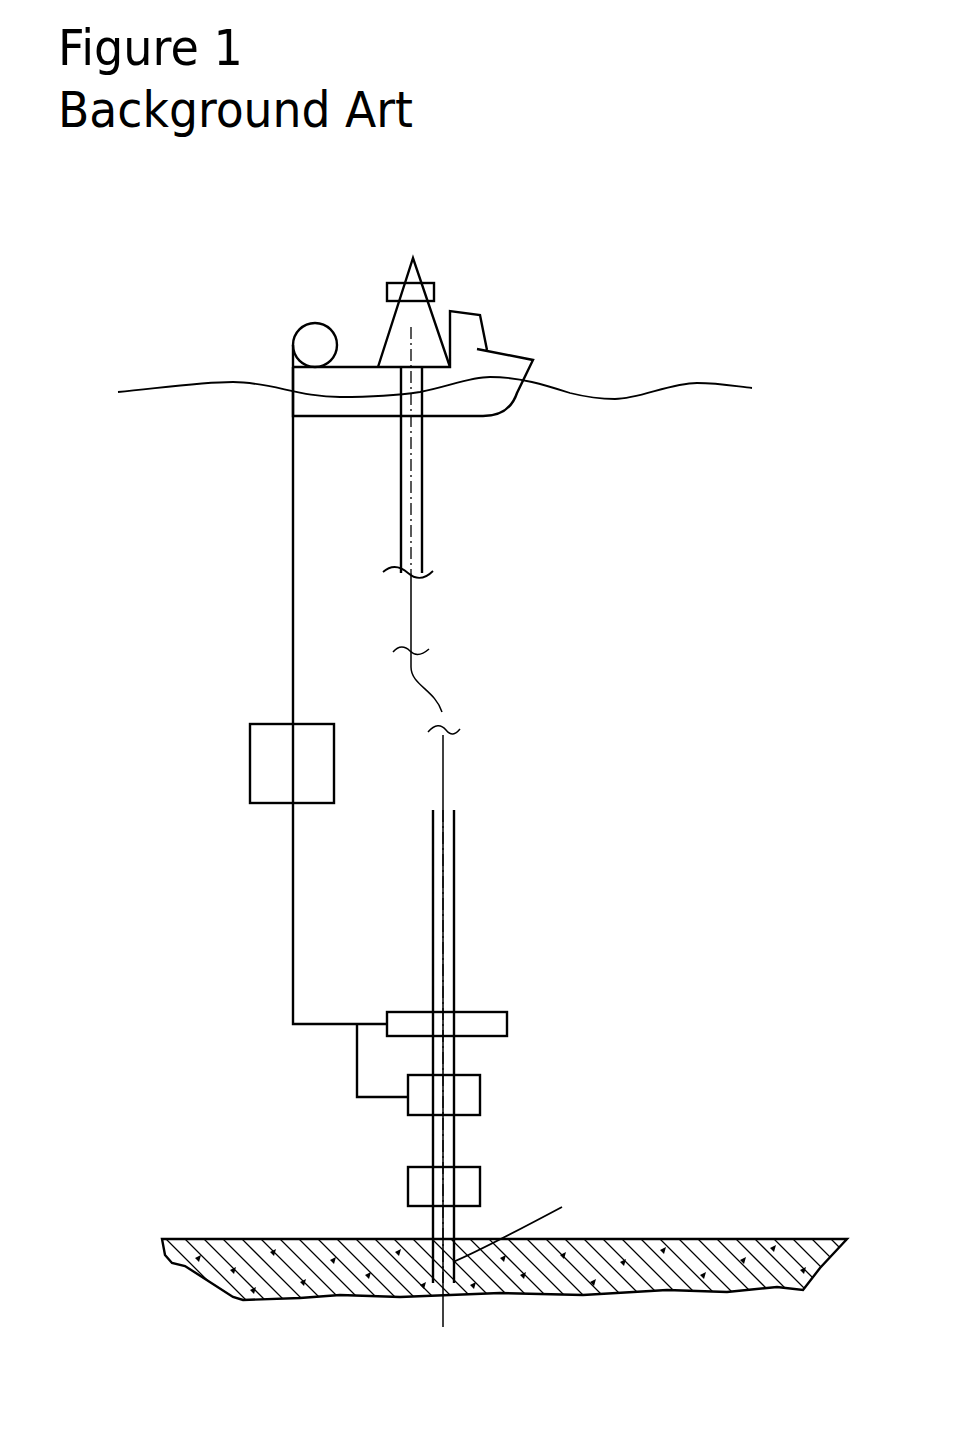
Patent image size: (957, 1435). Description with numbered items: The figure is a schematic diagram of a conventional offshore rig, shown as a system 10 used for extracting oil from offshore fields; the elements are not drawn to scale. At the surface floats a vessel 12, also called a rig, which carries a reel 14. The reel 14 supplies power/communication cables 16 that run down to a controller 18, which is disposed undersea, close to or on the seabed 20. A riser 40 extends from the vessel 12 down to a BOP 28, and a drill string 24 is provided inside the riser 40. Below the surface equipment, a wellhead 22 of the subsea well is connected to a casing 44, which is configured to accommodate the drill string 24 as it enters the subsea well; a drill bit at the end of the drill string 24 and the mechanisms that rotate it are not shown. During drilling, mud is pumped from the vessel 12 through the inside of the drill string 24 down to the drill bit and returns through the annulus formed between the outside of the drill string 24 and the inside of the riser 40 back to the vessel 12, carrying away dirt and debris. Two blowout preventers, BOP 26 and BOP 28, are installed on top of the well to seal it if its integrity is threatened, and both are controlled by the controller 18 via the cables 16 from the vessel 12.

The system 10 is at (195, 263).
The vessel 12 is at (507, 350).
The reel 14 is at (299, 327).
The power/communication cables 16 is at (293, 548).
The controller 18 is at (334, 752).
The seabed 20 is at (632, 1239).
The wellhead 22 is at (480, 1190).
The drill string 24 is at (411, 613).
The BOP 26 is at (480, 1095).
The BOP 28 is at (507, 1024).
The riser 40 is at (422, 535).
The casing 44 is at (528, 1217).